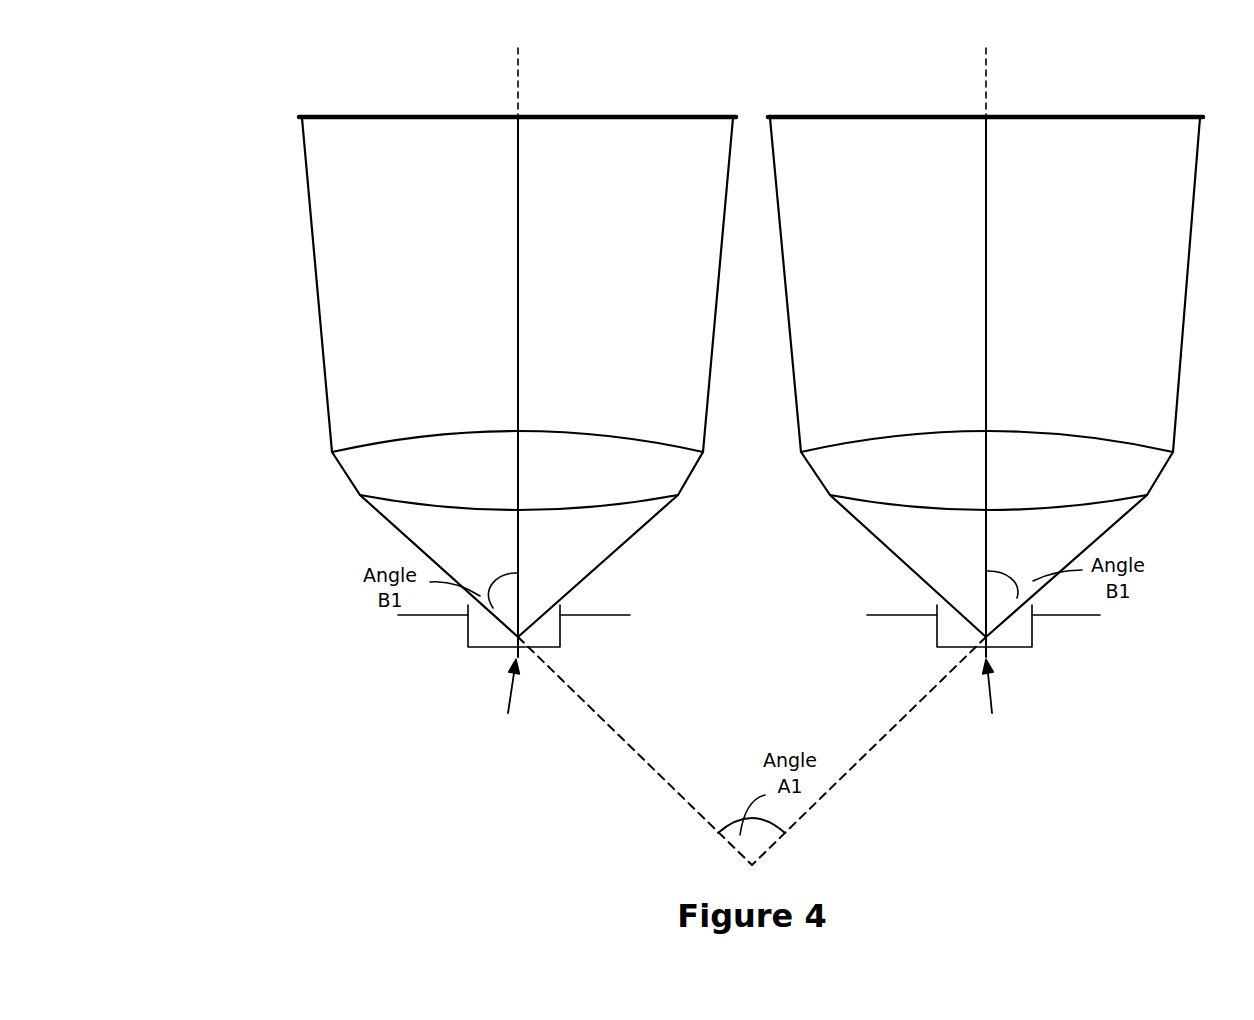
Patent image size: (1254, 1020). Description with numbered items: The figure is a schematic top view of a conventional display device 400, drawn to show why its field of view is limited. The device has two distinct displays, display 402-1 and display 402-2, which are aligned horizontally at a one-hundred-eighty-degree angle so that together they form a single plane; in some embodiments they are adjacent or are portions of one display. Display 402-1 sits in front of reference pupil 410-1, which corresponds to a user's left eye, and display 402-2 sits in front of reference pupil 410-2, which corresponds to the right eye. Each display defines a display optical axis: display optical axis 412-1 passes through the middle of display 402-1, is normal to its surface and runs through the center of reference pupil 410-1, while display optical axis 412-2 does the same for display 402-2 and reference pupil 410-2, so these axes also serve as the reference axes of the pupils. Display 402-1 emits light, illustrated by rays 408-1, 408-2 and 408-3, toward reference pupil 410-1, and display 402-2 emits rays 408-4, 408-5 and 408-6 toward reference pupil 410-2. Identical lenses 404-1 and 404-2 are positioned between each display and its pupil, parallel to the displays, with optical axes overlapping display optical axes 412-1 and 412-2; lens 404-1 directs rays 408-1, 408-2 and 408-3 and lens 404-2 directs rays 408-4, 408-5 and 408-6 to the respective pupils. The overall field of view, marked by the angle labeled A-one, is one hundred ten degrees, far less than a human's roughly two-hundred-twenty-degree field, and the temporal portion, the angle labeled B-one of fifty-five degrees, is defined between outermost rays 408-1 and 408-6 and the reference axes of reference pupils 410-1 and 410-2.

The conventional display device 400 is at (229, 38).
The display 402-1 is at (328, 116).
The display 402-2 is at (797, 116).
The lens 404-1 is at (482, 474).
The lens 404-2 is at (950, 474).
The ray 408-1 is at (318, 310).
The ray 408-2 is at (517, 283).
The ray 408-3 is at (718, 297).
The ray 408-4 is at (793, 372).
The ray 408-5 is at (985, 283).
The ray 408-6 is at (1185, 297).
The reference pupil 410-1 is at (507, 700).
The reference pupil 410-2 is at (989, 700).
The display optical axis 412-1 is at (519, 83).
The display optical axis 412-2 is at (987, 83).